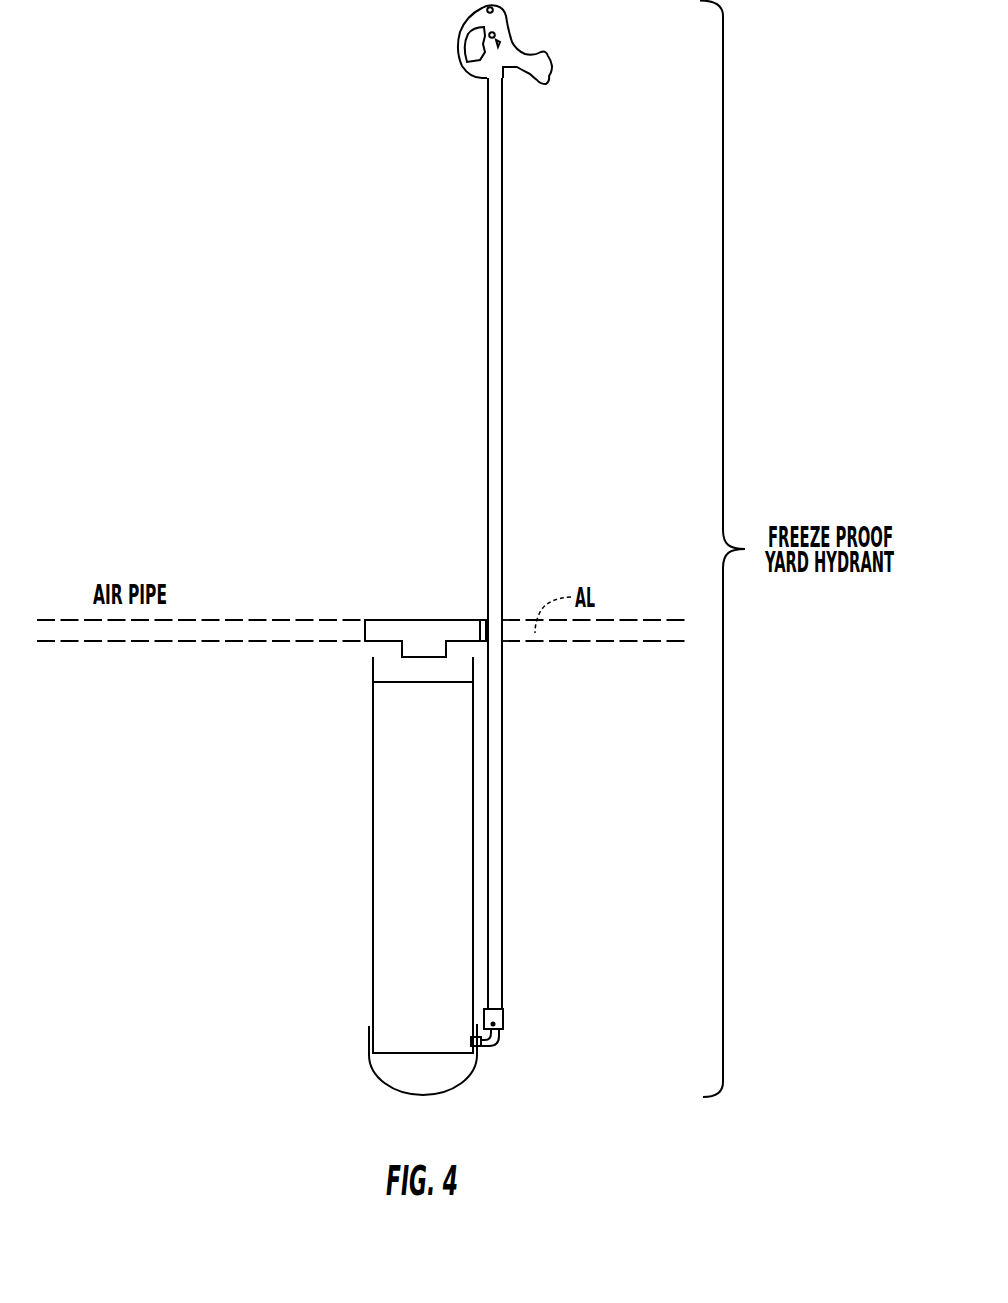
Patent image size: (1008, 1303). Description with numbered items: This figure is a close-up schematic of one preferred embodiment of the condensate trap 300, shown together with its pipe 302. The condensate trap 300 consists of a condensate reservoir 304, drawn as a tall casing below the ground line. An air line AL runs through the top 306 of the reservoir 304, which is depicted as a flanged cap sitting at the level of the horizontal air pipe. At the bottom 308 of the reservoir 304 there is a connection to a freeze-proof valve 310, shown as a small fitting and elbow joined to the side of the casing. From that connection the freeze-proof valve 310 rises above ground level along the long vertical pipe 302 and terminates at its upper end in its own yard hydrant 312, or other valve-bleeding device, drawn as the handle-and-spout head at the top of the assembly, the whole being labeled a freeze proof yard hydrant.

The condensate trap 300 is at (363, 996).
The pipe 302 is at (503, 288).
The condensate reservoir 304 is at (437, 940).
The top 306 is at (420, 620).
The bottom 308 is at (398, 1053).
The freeze-proof valve 310 is at (504, 1030).
The yard hydrant 312 is at (540, 62).